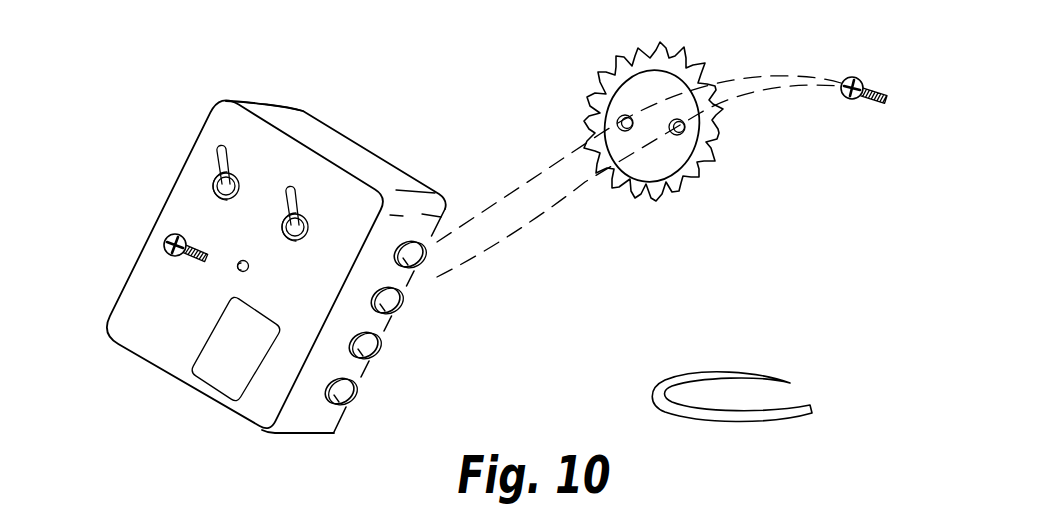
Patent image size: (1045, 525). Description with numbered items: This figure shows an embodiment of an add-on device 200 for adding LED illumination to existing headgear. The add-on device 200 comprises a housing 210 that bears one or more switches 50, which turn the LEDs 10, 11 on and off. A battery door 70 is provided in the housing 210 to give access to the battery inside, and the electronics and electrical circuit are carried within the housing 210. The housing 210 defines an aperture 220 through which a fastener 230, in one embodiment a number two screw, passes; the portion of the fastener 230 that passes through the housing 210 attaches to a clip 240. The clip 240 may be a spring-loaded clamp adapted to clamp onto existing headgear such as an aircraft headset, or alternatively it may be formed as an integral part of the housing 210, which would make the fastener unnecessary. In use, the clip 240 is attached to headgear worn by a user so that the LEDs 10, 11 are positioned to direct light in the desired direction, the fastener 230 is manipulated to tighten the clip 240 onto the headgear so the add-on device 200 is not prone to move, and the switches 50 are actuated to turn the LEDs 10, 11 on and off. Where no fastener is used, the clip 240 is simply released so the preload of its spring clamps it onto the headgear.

The add-on device 200 is at (152, 146).
The housing 210 is at (246, 131).
The switches 50 is at (228, 162).
The fastener 230 is at (189, 254).
The aperture 220 is at (241, 272).
The battery door 70 is at (232, 368).
The LEDs 10 is at (410, 264).
The LEDs 11 is at (394, 310).
The clip 240 is at (727, 189).